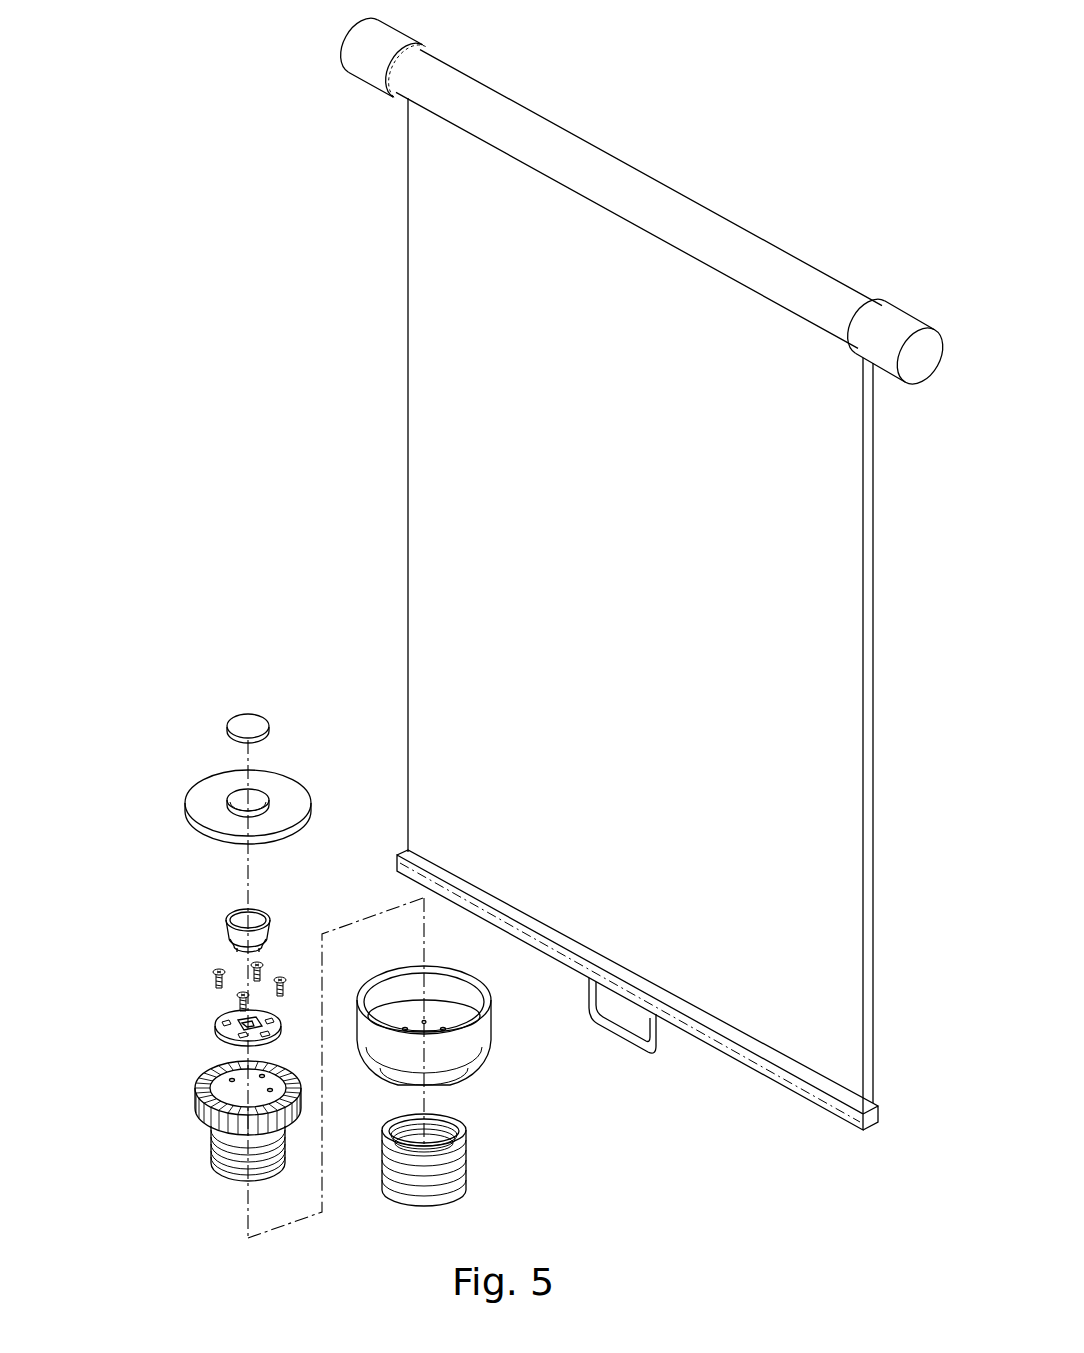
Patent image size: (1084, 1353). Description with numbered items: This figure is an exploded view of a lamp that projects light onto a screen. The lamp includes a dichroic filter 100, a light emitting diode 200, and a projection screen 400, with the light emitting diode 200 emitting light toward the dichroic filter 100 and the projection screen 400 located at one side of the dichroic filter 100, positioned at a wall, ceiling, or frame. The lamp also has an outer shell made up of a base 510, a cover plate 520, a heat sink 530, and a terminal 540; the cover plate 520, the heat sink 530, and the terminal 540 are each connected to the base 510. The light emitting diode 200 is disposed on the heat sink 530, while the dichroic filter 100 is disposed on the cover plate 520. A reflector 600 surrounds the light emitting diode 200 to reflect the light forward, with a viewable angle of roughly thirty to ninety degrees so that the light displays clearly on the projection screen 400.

The projection screen 400 is at (463, 384).
The dichroic filter 100 is at (250, 726).
The cover plate 520 is at (230, 821).
The reflector 600 is at (232, 939).
The light emitting diode 200 is at (218, 1037).
The heat sink 530 is at (215, 1121).
The base 510 is at (450, 1057).
The terminal 540 is at (465, 1168).